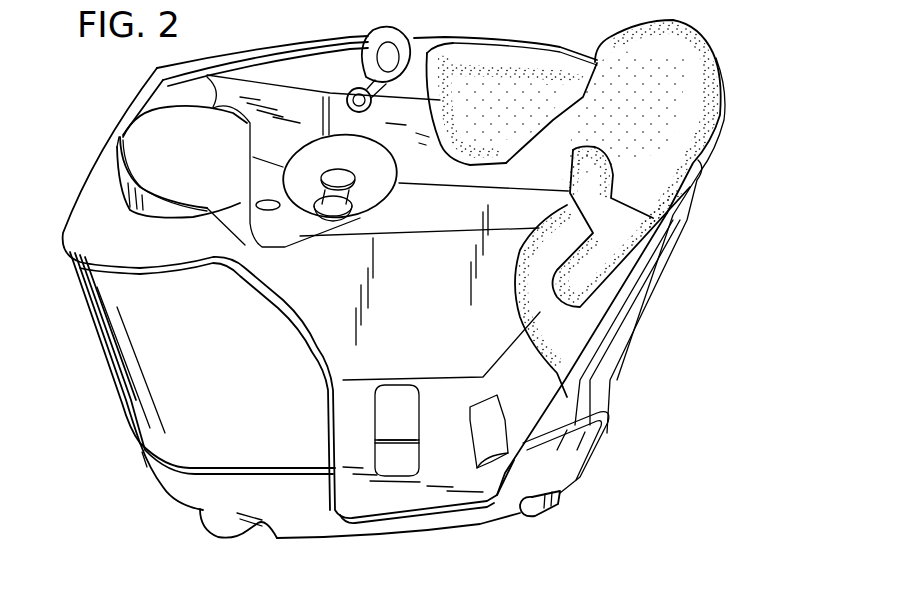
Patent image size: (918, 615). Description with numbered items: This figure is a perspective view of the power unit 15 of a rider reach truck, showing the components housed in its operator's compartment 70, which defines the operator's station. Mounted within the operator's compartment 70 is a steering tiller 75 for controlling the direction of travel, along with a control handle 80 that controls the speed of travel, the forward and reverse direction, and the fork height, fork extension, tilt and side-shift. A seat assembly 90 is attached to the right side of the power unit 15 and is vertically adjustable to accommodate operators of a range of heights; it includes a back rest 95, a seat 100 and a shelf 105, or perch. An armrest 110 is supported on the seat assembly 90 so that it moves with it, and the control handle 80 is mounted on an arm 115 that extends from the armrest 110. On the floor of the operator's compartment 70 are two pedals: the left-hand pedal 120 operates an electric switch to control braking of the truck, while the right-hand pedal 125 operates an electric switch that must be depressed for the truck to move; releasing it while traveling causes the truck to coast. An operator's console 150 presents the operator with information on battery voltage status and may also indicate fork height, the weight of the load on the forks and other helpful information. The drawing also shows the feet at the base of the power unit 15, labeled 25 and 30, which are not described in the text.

The power unit 15 is at (115, 392).
The left foot 25 is at (220, 523).
The right foot 30 is at (550, 512).
The operator's compartment 70 is at (459, 355).
The steering tiller 75 is at (380, 190).
The control handle 80 is at (368, 85).
The seat assembly 90 is at (708, 34).
The back rest 95 is at (672, 127).
The seat 100 is at (563, 340).
The shelf 105 is at (600, 202).
The armrest 110 is at (522, 48).
The arm 115 is at (418, 45).
The left-hand pedal 120 is at (400, 463).
The right-hand pedal 125 is at (393, 402).
The operator's console 150 is at (143, 138).